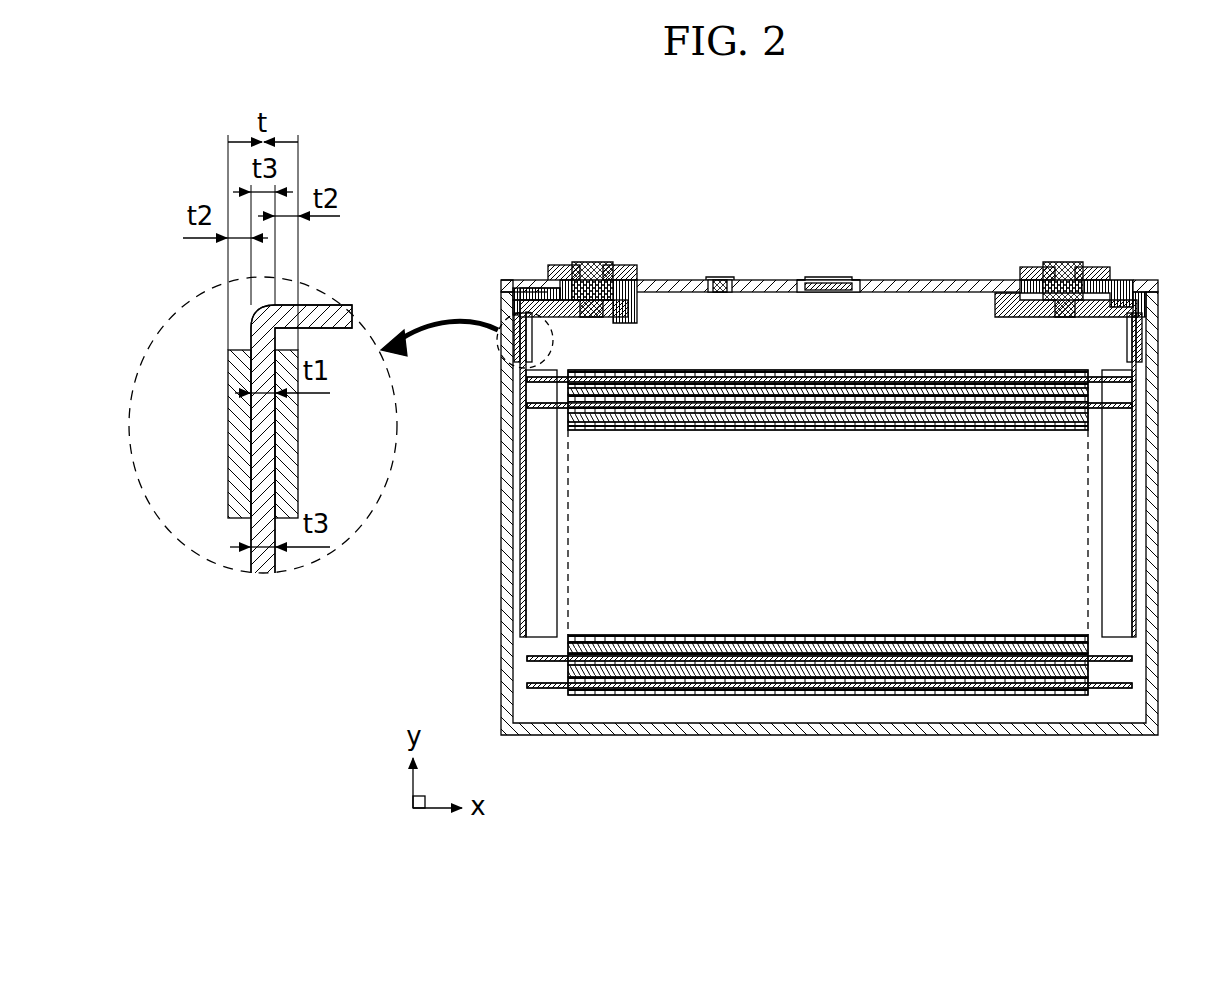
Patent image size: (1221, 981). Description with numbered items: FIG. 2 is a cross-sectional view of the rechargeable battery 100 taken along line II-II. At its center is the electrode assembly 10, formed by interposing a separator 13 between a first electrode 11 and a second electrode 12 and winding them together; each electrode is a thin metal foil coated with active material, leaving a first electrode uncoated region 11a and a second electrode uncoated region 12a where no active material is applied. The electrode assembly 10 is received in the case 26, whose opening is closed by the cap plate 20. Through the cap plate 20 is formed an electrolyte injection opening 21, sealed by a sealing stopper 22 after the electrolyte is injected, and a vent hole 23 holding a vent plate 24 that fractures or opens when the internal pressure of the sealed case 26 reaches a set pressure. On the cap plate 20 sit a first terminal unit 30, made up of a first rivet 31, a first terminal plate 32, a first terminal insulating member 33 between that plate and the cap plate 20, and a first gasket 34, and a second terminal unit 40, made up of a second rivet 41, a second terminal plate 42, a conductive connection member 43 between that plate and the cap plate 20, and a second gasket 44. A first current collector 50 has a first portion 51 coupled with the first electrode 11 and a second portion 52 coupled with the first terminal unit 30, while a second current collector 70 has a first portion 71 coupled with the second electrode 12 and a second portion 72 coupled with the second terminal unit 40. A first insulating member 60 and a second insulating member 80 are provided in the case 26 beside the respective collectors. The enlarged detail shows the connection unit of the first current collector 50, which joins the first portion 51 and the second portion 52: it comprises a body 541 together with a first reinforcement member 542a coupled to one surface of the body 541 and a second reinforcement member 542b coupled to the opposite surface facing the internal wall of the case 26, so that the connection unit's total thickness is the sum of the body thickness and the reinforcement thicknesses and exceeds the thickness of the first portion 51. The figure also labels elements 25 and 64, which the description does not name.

The rechargeable battery 100 is at (802, 123).
The electrode assembly 10 is at (827, 586).
The first electrode 11 is at (623, 690).
The first electrode uncoated region 11a is at (540, 690).
The second electrode 12 is at (700, 690).
The second electrode uncoated region 12a is at (1100, 690).
The separator 13 is at (830, 666).
The cap plate 20 is at (903, 277).
The electrolyte injection opening 21 is at (722, 293).
The sealing stopper 22 is at (726, 279).
The vent hole 23 is at (830, 292).
The vent plate 24 is at (833, 278).
The cap plate end portion 25 is at (515, 283).
The case 26 is at (1156, 578).
The first terminal unit 30 is at (614, 243).
The first rivet 31 is at (593, 259).
The first terminal plate 32 is at (622, 265).
The first terminal insulating member 33 is at (640, 276).
The first gasket 34 is at (572, 265).
The second terminal unit 40 is at (1069, 243).
The second rivet 41 is at (1059, 263).
The second terminal plate 42 is at (1088, 267).
The conductive connection member 43 is at (1105, 279).
The second gasket 44 is at (1028, 267).
The first current collector 50 is at (405, 483).
The first portion 51 is at (517, 397).
The second portion 52 is at (612, 320).
The first insulating member 60 is at (516, 303).
The insulating member upper portion 64 is at (536, 289).
The second current collector 70 is at (1161, 475).
The first portion 71 is at (1138, 445).
The second portion 72 is at (1040, 320).
The second insulating member 80 is at (1150, 303).
The body 541 is at (263, 482).
The first reinforcement member 542a is at (285, 443).
The second reinforcement member 542b is at (240, 424).